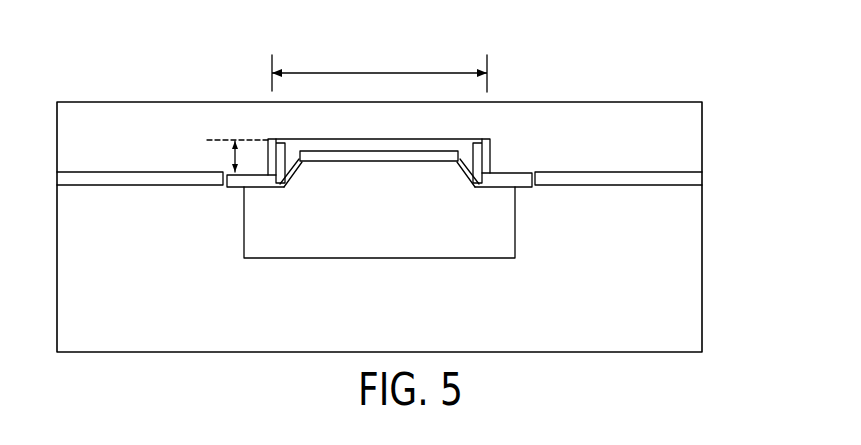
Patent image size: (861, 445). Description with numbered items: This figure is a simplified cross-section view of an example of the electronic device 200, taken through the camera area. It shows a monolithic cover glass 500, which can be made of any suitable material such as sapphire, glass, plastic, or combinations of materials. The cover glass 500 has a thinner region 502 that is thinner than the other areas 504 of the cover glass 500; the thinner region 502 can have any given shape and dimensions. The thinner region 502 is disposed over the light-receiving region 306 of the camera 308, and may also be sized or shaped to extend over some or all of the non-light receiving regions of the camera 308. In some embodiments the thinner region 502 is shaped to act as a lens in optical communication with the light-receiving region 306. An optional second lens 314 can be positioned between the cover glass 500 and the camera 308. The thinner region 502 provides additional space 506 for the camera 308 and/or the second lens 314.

The electronic device 200 is at (409, 176).
The light-receiving region 306 is at (380, 164).
The camera 308 is at (508, 238).
The second lens 314 is at (435, 160).
The cover glass 500 is at (695, 162).
The thinner region 502 is at (380, 72).
The other areas of the cover glass 504 is at (153, 93).
The additional space 506 is at (233, 160).